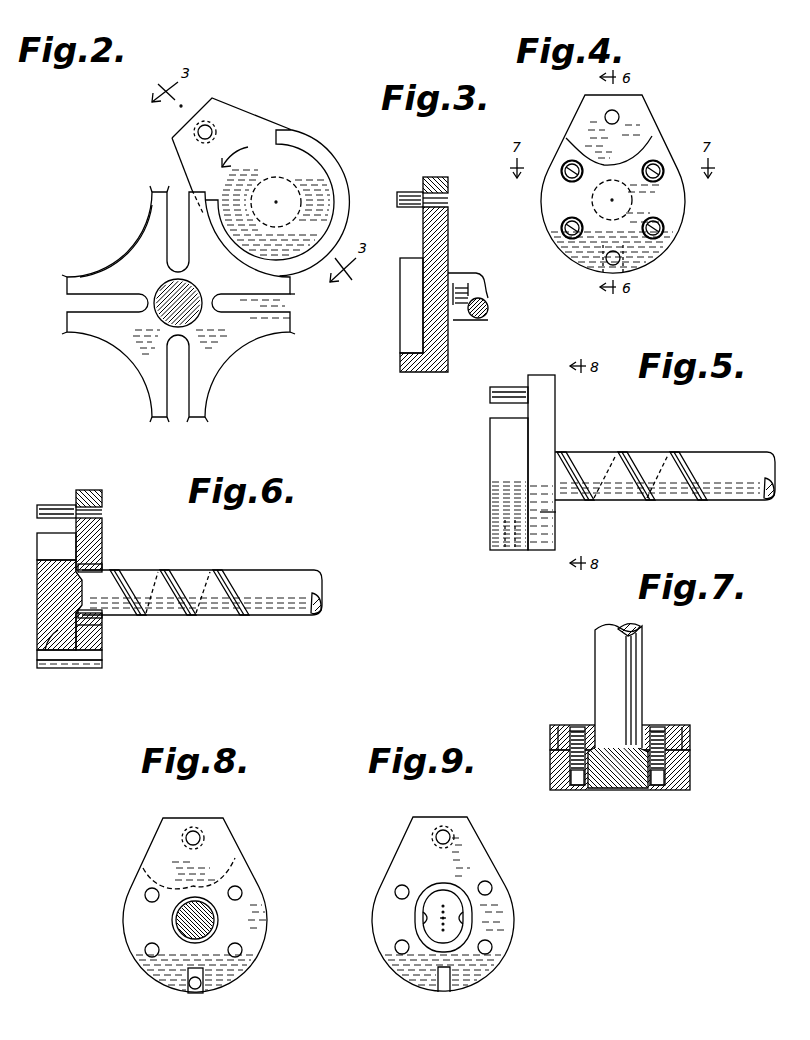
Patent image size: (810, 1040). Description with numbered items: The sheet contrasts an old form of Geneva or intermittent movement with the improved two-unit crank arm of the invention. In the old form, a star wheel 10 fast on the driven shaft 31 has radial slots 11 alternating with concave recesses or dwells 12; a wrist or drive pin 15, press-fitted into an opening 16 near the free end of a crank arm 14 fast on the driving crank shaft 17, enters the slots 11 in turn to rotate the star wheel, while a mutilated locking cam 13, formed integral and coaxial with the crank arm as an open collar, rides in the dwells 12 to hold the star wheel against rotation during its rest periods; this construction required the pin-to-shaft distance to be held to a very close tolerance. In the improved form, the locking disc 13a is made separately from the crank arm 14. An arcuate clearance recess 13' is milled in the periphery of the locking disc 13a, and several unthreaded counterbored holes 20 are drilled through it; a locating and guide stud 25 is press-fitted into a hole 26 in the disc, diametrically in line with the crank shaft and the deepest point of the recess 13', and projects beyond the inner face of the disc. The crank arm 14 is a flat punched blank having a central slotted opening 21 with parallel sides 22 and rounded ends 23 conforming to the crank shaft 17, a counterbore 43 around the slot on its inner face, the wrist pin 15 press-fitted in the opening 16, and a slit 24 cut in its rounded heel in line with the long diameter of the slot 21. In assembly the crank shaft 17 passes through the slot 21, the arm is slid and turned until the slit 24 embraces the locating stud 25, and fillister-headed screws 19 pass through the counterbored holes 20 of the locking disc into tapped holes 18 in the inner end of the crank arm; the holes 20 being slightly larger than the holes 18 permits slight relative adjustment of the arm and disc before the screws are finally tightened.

In FIG. 2, the star wheel 10 is at (137, 340).
In FIG. 2, the radial slots 11 is at (168, 192).
In FIG. 2, the concave recesses or dwells 12 is at (146, 240).
In FIG. 2, the driven shaft 31 is at (164, 291).
In FIG. 2, the mutilated locking cam 13 is at (331, 203).
In FIG. 3, the mutilated locking cam 13 is at (395, 322).
In FIG. 4, the arcuate clearance recess 13' is at (631, 134).
In FIG. 6, the arcuate clearance recess 13' is at (42, 546).
In FIG. 8, the arcuate clearance recess 13' is at (210, 858).
In FIG. 4, the locking disc 13a is at (660, 243).
In FIG. 5, the locking disc 13a is at (497, 470).
In FIG. 6, the locking disc 13a is at (45, 590).
In FIG. 7, the locking disc 13a is at (692, 773).
In FIG. 2, the crank arm 14 is at (262, 128).
In FIG. 3, the crank arm 14 is at (447, 244).
In FIG. 4, the crank arm 14 is at (582, 114).
In FIG. 5, the crank arm 14 is at (545, 421).
In FIG. 6, the crank arm 14 is at (103, 540).
In FIG. 7, the crank arm 14 is at (680, 727).
In FIG. 8, the crank arm 14 is at (160, 845).
In FIG. 9, the crank arm 14 is at (480, 852).
In FIG. 2, the wrist or drive pin 15 is at (210, 126).
In FIG. 3, the wrist or drive pin 15 is at (407, 192).
In FIG. 4, the wrist or drive pin 15 is at (620, 113).
In FIG. 5, the wrist or drive pin 15 is at (504, 390).
In FIG. 6, the wrist or drive pin 15 is at (50, 505).
In FIG. 8, the wrist or drive pin 15 is at (197, 830).
In FIG. 9, the wrist or drive pin 15 is at (450, 832).
In FIG. 3, the opening 16 is at (441, 180).
In FIG. 6, the opening 16 is at (88, 490).
In FIG. 2, the crank shaft 17 is at (296, 190).
In FIG. 3, the crank shaft 17 is at (466, 282).
In FIG. 4, the crank shaft 17 is at (595, 202).
In FIG. 5, the crank shaft 17 is at (648, 458).
In FIG. 6, the crank shaft 17 is at (280, 574).
In FIG. 7, the crank shaft 17 is at (596, 656).
In FIG. 8, the crank shaft 17 is at (174, 922).
In FIG. 7, the tapped holes 18 is at (550, 737).
In FIG. 8, the tapped holes 18 is at (145, 895).
In FIG. 9, the tapped holes 18 is at (395, 890).
In FIG. 4, the fillister-headed screws 19 is at (665, 172).
In FIG. 7, the fillister-headed screws 19 is at (578, 727).
In FIG. 4, the counterbored holes 20 is at (660, 162).
In FIG. 7, the counterbored holes 20 is at (576, 790).
In FIG. 6, the slotted opening 21 is at (105, 628).
In FIG. 8, the slotted opening 21 is at (214, 903).
In FIG. 9, the slotted opening 21 is at (465, 905).
In FIG. 9, the parallel sides 22 is at (466, 918).
In FIG. 9, the rounded ends 23 is at (440, 892).
In FIG. 5, the slit 24 is at (558, 512).
In FIG. 8, the slit 24 is at (205, 978).
In FIG. 9, the slit 24 is at (446, 990).
In FIG. 4, the locating and guide stud 25 is at (606, 266).
In FIG. 5, the locating and guide stud 25 is at (505, 517).
In FIG. 6, the locating and guide stud 25 is at (60, 664).
In FIG. 8, the locating and guide stud 25 is at (193, 995).
In FIG. 6, the hole 26 is at (40, 636).
In FIG. 6, the counterbore 43 is at (103, 553).
In FIG. 7, the counterbore 43 is at (590, 738).
In FIG. 9, the counterbore 43 is at (468, 930).